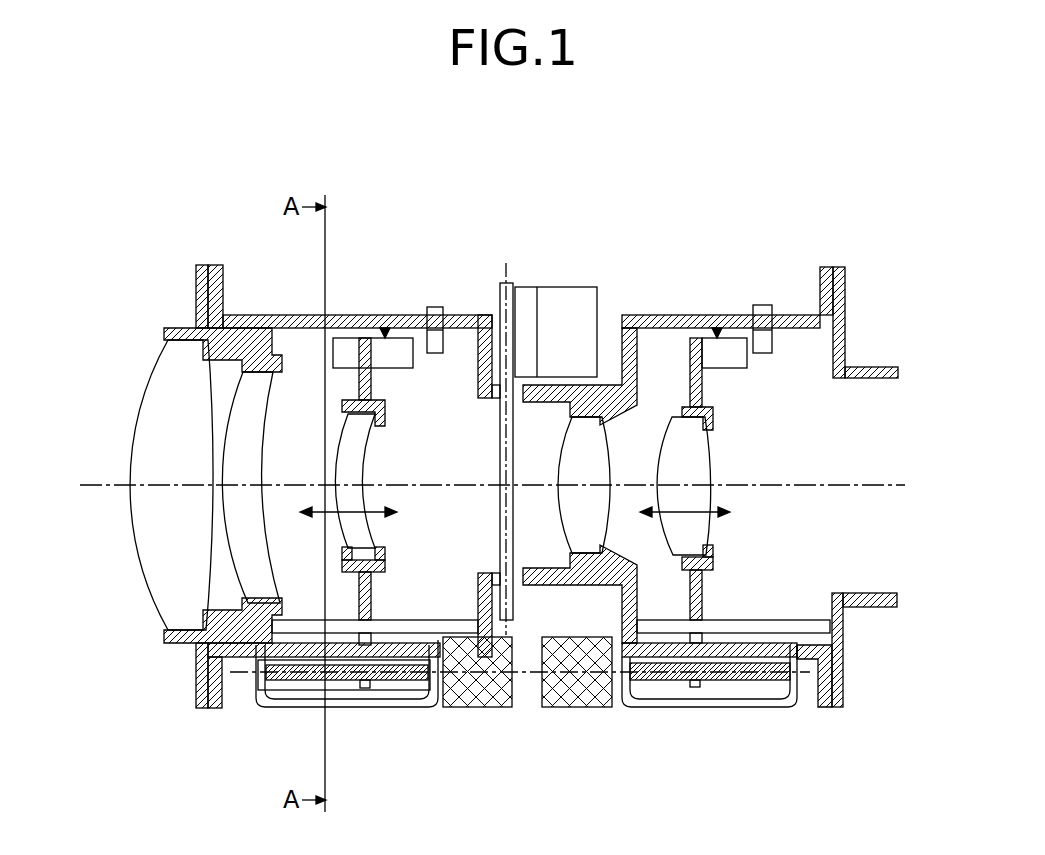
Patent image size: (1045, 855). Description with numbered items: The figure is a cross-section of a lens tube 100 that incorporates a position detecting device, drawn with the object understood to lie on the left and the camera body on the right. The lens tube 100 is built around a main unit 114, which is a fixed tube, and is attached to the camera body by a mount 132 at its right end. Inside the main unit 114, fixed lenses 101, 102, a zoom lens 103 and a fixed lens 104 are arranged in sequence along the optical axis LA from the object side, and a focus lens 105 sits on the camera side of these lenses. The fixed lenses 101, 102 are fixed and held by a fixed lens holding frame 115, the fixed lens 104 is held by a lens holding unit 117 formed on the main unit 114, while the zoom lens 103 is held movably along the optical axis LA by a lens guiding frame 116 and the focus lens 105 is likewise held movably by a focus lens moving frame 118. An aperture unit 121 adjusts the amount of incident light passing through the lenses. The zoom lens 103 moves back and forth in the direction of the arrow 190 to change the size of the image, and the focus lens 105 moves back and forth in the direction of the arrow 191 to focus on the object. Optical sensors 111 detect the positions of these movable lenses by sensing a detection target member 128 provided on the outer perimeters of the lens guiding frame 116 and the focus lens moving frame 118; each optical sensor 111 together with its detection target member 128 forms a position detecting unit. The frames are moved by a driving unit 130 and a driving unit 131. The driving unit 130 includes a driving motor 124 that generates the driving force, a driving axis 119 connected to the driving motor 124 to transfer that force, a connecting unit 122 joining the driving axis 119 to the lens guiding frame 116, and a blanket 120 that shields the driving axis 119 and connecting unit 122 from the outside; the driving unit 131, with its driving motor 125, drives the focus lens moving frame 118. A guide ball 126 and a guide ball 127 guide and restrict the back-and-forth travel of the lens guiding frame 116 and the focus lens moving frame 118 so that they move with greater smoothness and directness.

The lens tube 100 is at (744, 150).
The fixed lens 101 is at (170, 383).
The fixed lens 102 is at (257, 395).
The zoom lens 103 is at (360, 435).
The fixed lens 104 is at (561, 452).
The focus lens 105 is at (692, 455).
The optical sensor 111 is at (436, 307).
The main unit 114 is at (468, 313).
The fixed lens holding frame 115 is at (197, 278).
The lens guiding frame 116 is at (385, 567).
The lens holding unit 117 is at (622, 566).
The focus lens moving frame 118 is at (703, 607).
The driving axis 119 is at (300, 677).
The blanket 120 is at (262, 688).
The aperture unit 121 is at (562, 297).
The connecting unit 122 is at (362, 683).
The driving motor 124 is at (475, 695).
The driving motor 125 is at (578, 697).
The guide ball 126 is at (300, 625).
The guide ball 127 is at (737, 637).
The detection target member 128 is at (386, 328).
The driving unit 130 is at (413, 688).
The driving unit 131 is at (775, 688).
The mount 132 is at (845, 348).
The arrow 190 is at (345, 445).
The arrow 191 is at (652, 450).
The optical axis LA is at (100, 487).